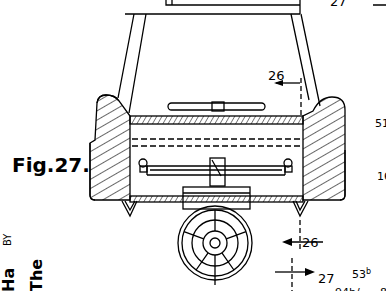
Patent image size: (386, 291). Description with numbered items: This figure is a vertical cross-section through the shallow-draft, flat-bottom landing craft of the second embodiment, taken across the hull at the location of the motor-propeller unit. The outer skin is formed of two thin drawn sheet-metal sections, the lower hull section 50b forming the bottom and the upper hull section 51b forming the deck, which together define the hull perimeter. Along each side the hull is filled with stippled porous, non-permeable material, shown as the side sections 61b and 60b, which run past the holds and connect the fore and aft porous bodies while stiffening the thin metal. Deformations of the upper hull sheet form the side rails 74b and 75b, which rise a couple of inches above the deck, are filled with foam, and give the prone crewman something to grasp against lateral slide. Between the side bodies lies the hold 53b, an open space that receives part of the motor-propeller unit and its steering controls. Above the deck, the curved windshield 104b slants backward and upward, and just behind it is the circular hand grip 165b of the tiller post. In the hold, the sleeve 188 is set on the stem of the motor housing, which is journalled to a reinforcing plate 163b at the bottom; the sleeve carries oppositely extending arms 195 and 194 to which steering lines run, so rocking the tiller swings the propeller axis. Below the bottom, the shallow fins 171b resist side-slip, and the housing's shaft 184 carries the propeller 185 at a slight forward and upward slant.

The curved windshield 104b is at (306, 42).
The upper hull section 51b is at (92, 118).
The side rail 74b is at (106, 96).
The porous material side section 61b is at (90, 182).
The lower hull section 50b is at (90, 207).
The side rail 75b is at (333, 98).
The porous material side section 60b is at (344, 179).
The hold 53b is at (152, 133).
The circular hand grip 165b is at (182, 103).
The sleeve 188 is at (216, 167).
The arm 195 is at (157, 173).
The arm 194 is at (289, 173).
The reinforcing plate 163b is at (257, 202).
The fin 171b is at (128, 213).
The shaft 184 is at (181, 245).
The propeller 185 is at (185, 262).